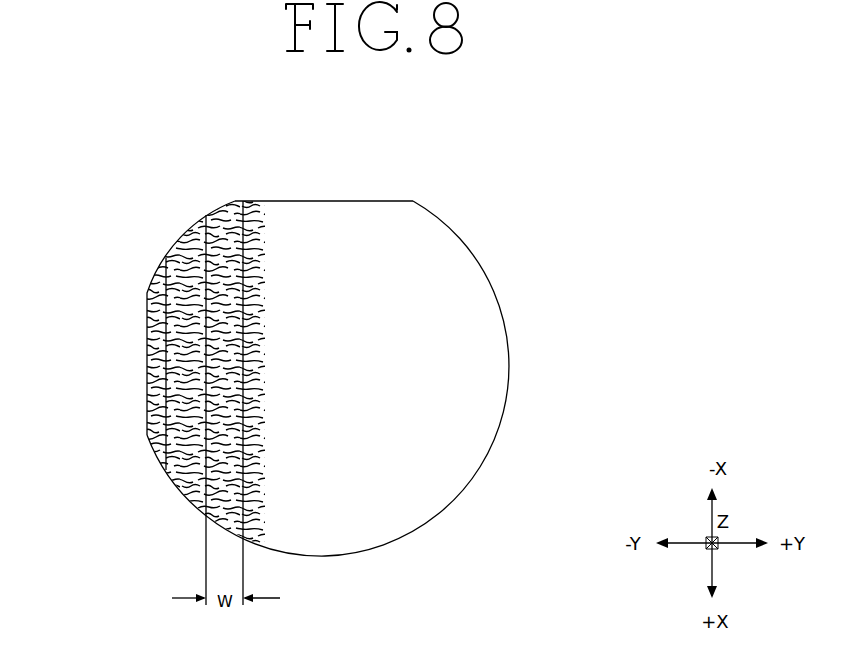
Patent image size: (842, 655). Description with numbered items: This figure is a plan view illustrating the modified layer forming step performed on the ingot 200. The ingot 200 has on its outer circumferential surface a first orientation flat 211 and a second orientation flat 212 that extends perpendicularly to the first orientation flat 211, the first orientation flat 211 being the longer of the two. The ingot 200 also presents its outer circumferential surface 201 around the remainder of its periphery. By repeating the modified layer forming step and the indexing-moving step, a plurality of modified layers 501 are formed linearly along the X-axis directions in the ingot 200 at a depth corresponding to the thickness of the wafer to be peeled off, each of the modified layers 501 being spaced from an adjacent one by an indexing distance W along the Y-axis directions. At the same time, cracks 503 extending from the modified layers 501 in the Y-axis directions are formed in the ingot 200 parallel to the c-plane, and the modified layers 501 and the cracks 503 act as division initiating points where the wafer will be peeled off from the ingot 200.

The ingot 200 is at (320, 339).
The lens body (spherical surface) 201 is at (480, 367).
The first orientation flat 211 is at (340, 200).
The second orientation flat 212 is at (147, 350).
The modified layers 501 is at (207, 233).
The cracks 503 is at (265, 292).